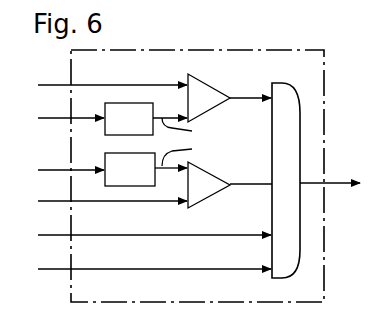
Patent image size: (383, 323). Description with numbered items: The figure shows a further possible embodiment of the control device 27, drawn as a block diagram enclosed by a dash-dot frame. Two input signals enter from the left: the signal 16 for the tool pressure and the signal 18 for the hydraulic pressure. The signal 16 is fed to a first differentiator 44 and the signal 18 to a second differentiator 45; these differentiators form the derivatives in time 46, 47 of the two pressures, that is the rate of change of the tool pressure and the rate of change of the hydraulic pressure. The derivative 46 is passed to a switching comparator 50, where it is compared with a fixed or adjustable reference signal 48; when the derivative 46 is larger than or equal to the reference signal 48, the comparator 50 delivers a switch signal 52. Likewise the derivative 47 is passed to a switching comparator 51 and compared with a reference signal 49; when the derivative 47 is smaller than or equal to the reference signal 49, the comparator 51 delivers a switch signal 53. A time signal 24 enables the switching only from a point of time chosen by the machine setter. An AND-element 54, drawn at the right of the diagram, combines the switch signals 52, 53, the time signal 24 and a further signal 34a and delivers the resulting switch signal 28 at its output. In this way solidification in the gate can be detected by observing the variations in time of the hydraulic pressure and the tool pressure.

The control device 27 is at (325, 262).
The reference signal 48 is at (52, 84).
The signal for the tool pressure 16 is at (50, 117).
The signal for the hydraulic pressure 18 is at (50, 169).
The reference signal 49 is at (52, 201).
The time signal 24 is at (52, 234).
The signal 34a is at (61, 270).
The differentiator 44 is at (136, 129).
The differentiator 45 is at (136, 180).
The derivative in time of the tool pressure signal 46 is at (190, 131).
The derivative in time of the hydraulic pressure signal 47 is at (190, 153).
The switching comparator 50 is at (212, 108).
The switching comparator 51 is at (212, 194).
The switch signal 52 is at (249, 93).
The switch signal 53 is at (250, 179).
The AND-element 54 is at (286, 180).
The switch signal 28 is at (333, 179).